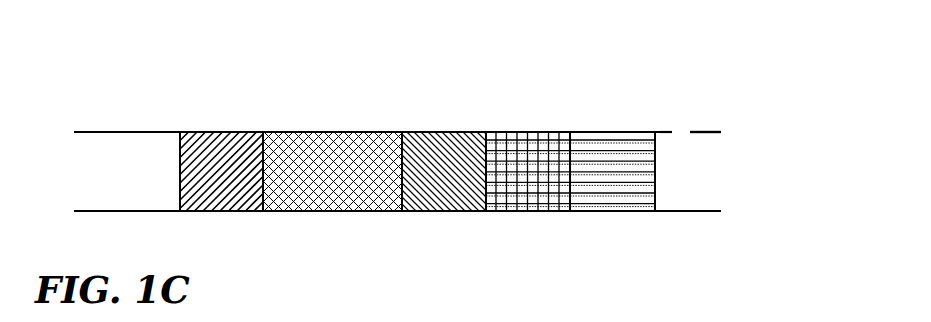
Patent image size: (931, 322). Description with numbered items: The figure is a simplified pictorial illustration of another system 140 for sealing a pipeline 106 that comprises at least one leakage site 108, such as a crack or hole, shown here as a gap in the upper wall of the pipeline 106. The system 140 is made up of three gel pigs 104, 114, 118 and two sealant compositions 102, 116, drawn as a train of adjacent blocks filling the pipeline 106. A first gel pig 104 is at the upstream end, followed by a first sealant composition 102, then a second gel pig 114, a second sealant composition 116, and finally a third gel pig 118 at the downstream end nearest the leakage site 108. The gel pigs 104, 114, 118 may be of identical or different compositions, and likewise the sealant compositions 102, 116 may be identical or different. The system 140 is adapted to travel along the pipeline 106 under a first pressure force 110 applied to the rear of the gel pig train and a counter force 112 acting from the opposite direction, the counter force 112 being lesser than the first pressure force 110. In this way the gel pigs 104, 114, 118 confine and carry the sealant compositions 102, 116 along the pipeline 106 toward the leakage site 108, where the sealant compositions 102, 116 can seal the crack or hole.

The system for sealing a pipeline 140 is at (740, 41).
The gel pig 104 is at (222, 153).
The sealant composition 102 is at (353, 153).
The pipeline 106 is at (447, 132).
The gel pig 114 is at (440, 190).
The sealant composition 116 is at (527, 132).
The gel pig 118 is at (608, 132).
The leakage site 108 is at (682, 131).
The first pressure force 110 is at (121, 173).
The counter force 112 is at (714, 175).